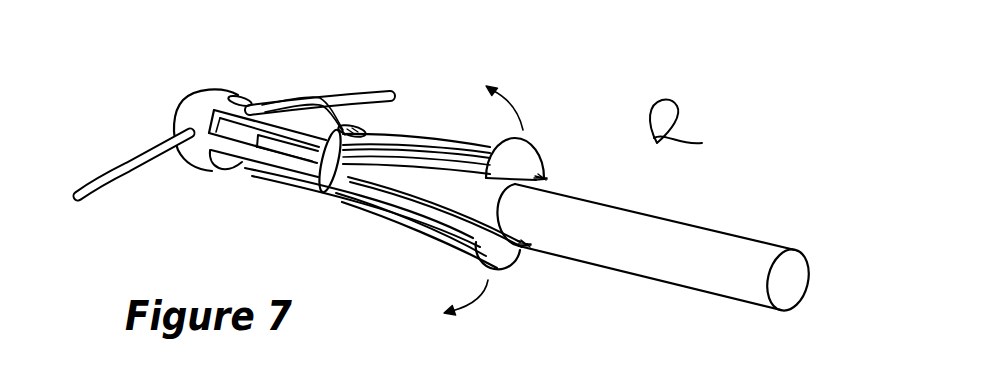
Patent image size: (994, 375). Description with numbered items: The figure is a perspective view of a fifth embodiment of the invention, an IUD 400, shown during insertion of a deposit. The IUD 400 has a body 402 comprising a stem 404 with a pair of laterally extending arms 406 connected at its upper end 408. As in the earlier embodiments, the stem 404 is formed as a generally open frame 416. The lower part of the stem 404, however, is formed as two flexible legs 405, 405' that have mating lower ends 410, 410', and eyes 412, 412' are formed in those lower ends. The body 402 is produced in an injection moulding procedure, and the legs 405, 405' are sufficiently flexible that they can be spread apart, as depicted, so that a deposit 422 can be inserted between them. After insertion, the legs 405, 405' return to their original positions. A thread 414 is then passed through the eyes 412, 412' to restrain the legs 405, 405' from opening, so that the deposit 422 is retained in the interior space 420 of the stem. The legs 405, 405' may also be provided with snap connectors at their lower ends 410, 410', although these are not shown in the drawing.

The IUD 400 is at (544, 88).
The body 402 is at (257, 96).
The stem 404 is at (298, 166).
The flexible leg 405 is at (371, 241).
The flexible leg 405' is at (433, 120).
The laterally extending arms 406 is at (370, 90).
The upper end 408 is at (178, 108).
The lower end 410 is at (516, 283).
The lower end 410' is at (556, 144).
The eye 412 is at (570, 282).
The eye 412' is at (608, 186).
The thread 414 is at (664, 96).
The open frame 416 is at (322, 117).
The interior space 420 is at (287, 147).
The deposit 422 is at (731, 252).